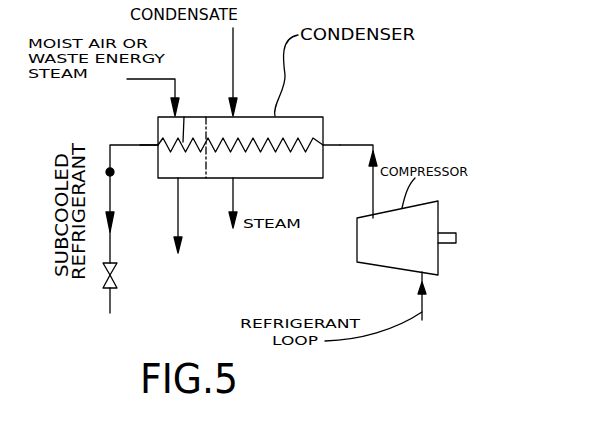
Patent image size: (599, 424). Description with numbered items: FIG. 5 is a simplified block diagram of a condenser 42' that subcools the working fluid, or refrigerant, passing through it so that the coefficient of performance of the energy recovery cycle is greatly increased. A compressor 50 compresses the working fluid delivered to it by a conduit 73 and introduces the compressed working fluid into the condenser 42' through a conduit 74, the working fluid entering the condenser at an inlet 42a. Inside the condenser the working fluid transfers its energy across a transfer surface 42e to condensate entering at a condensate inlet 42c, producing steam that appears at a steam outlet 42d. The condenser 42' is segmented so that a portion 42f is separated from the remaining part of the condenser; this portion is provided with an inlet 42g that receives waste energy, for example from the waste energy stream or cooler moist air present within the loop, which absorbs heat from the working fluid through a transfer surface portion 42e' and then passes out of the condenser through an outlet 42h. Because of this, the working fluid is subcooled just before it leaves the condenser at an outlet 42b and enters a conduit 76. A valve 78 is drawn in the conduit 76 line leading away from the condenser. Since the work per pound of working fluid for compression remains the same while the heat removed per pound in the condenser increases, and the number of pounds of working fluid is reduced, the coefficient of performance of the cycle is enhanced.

The condenser 42' is at (243, 113).
The working fluid inlet 42a is at (326, 147).
The working fluid outlet 42b is at (157, 148).
The condensate inlet 42c is at (234, 93).
The steam outlet 42d is at (236, 201).
The transfer surface 42e is at (245, 118).
The transfer surface portion 42e' is at (195, 85).
The segmented portion of condenser 42f is at (193, 116).
The waste energy inlet 42g is at (172, 97).
The waste stream outlet 42h is at (178, 216).
The compressor 50 is at (369, 265).
The conduit 73 is at (420, 301).
The conduit 74 is at (340, 144).
The conduit 76 is at (116, 143).
The expansion valve 78 is at (112, 274).